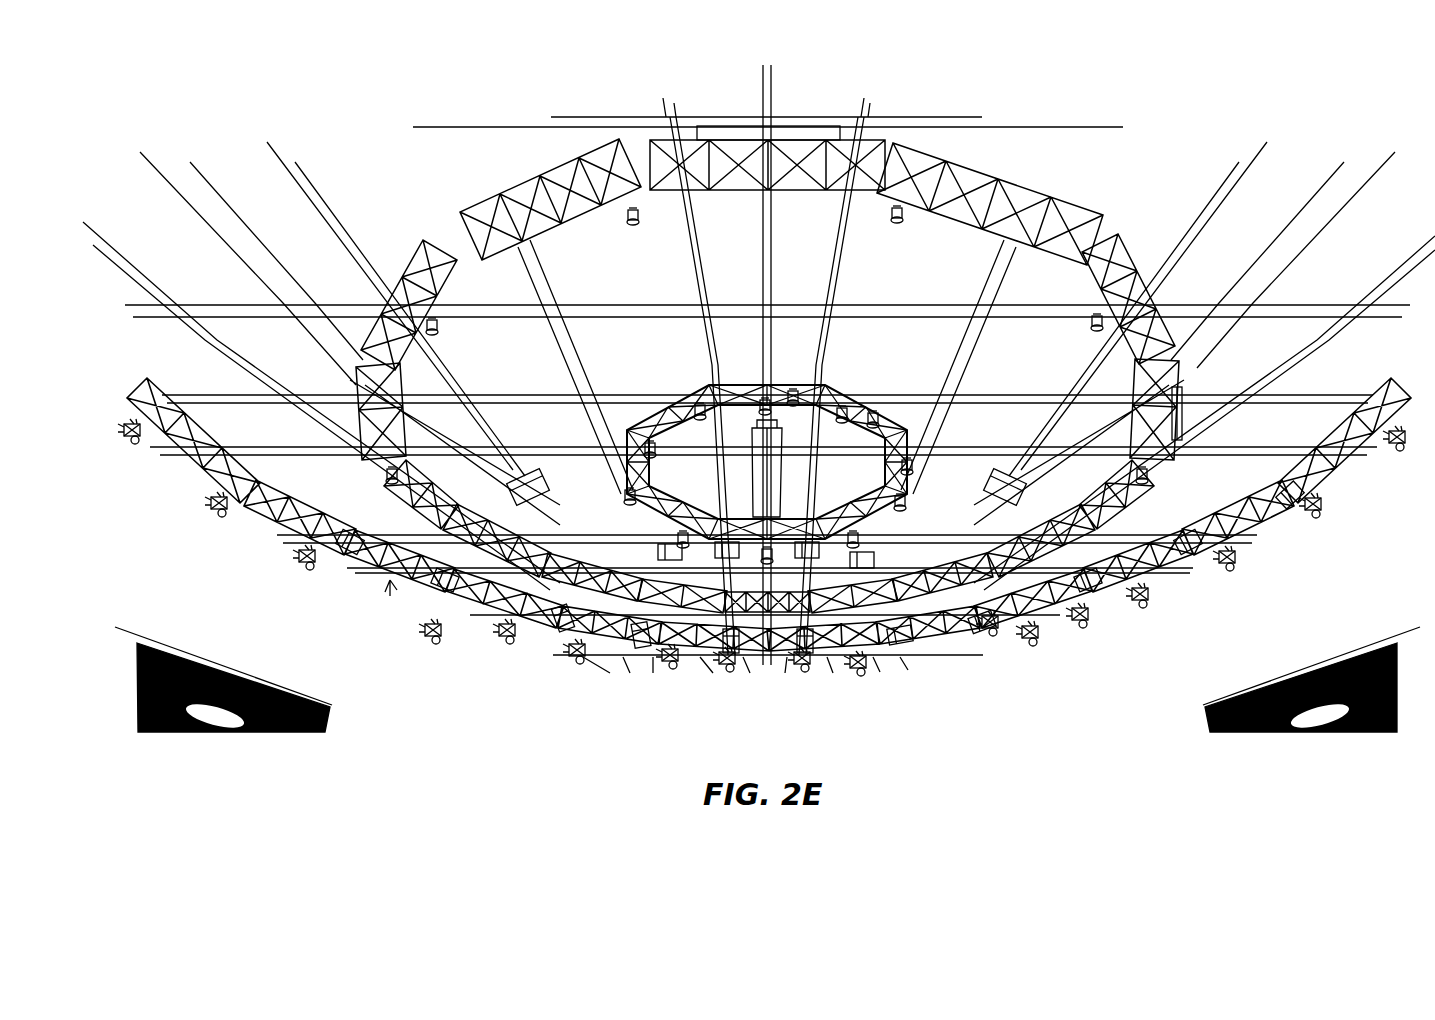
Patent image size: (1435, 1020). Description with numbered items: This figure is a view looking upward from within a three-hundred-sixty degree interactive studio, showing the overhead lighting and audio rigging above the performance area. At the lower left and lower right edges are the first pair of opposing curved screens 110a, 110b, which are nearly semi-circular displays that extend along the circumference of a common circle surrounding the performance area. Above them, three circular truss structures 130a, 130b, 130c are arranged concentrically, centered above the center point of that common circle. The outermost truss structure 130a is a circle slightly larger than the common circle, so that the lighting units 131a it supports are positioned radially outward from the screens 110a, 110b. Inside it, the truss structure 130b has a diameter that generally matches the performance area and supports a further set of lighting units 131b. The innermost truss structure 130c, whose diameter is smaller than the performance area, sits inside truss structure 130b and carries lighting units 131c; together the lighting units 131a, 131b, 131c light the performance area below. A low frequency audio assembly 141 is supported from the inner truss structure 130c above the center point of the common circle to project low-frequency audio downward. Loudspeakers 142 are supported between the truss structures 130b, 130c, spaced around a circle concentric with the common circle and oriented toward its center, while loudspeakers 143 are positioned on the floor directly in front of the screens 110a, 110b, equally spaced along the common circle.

The curved screen 110a is at (332, 705).
The curved screen 110b is at (1203, 705).
The truss structure 130a is at (192, 472).
The truss structure 130b is at (1060, 210).
The truss structure 130c is at (860, 403).
The lighting units 131a is at (1037, 627).
The lighting units 131b is at (1200, 378).
The lighting units 131c is at (905, 428).
The low frequency audio assembly 141 is at (760, 440).
The loudspeakers 142 is at (655, 544).
The loudspeakers 143 is at (567, 653).